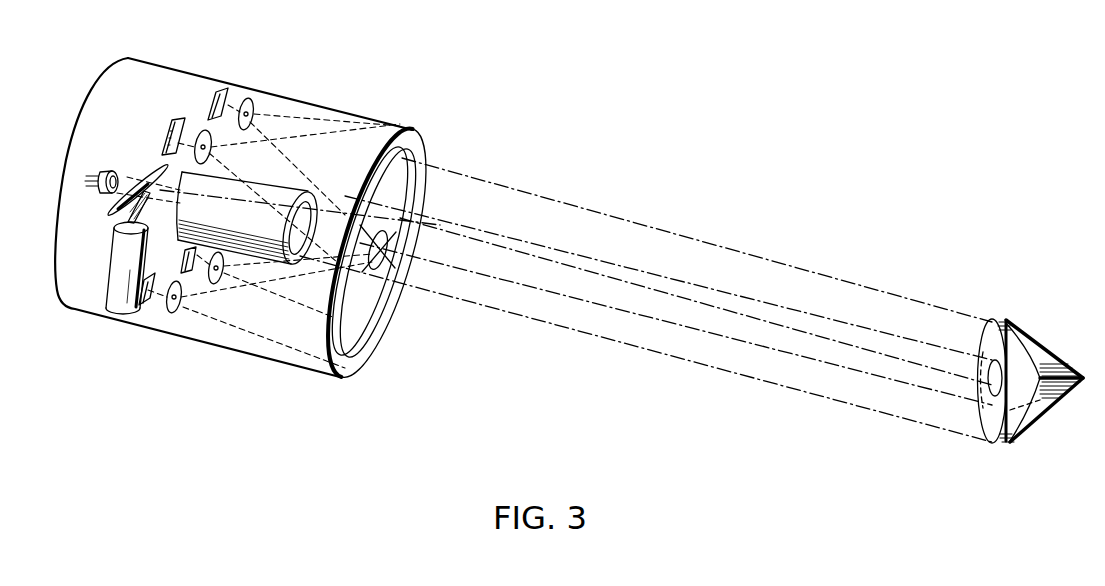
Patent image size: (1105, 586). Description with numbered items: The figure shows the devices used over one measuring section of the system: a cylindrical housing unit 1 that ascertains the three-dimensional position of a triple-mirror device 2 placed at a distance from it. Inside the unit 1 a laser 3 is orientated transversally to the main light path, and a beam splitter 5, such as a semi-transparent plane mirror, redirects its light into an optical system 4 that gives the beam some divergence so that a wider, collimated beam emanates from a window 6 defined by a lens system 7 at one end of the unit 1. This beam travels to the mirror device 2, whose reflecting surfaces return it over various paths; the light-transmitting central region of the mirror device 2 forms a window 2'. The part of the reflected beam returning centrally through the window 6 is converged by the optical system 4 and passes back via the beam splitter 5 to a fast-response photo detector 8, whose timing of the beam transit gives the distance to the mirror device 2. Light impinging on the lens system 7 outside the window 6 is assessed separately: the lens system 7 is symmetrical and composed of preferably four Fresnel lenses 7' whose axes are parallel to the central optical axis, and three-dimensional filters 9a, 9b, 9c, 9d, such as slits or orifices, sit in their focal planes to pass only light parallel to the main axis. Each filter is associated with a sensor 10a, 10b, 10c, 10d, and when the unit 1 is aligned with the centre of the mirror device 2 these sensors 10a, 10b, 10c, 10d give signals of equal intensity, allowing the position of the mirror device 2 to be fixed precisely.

The cylindrical housing unit 1 is at (252, 370).
The triple-mirror device 2 is at (1031, 369).
The window 2' is at (1068, 359).
The laser 3 is at (117, 295).
The optical system 4 is at (267, 270).
The beam splitter 5 is at (115, 210).
The window 6 is at (381, 272).
The lens system 7 is at (381, 228).
The Fresnel lenses 7' is at (386, 240).
The photo detector 8 is at (96, 190).
The three-dimensional filter 9a is at (201, 130).
The three-dimensional filter 9b is at (245, 98).
The three-dimensional filter 9c is at (172, 315).
The three-dimensional filter 9d is at (214, 287).
The sensor 10a is at (168, 120).
The sensor 10b is at (222, 90).
The sensor 10c is at (147, 310).
The sensor 10d is at (196, 275).